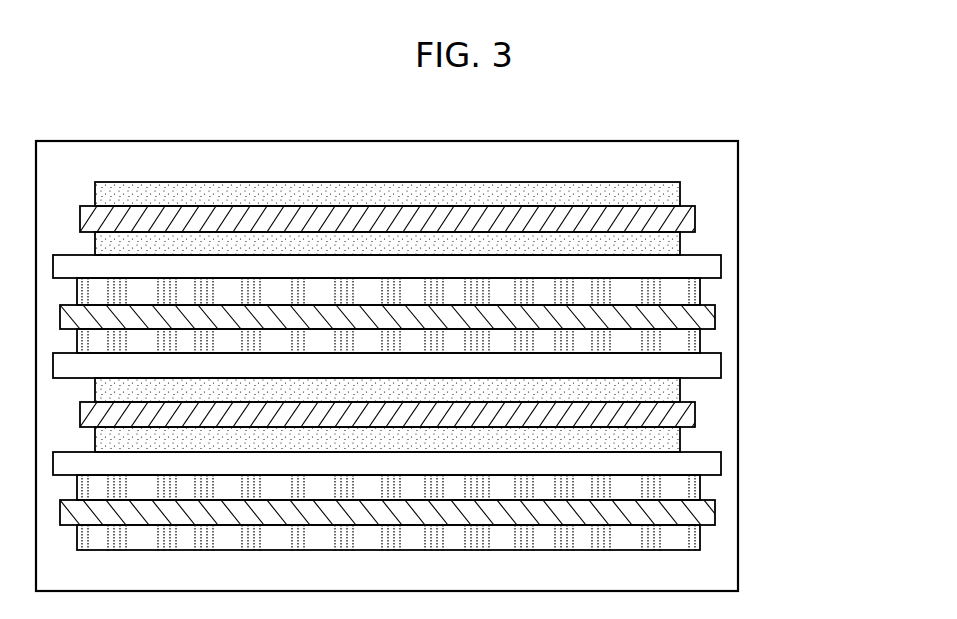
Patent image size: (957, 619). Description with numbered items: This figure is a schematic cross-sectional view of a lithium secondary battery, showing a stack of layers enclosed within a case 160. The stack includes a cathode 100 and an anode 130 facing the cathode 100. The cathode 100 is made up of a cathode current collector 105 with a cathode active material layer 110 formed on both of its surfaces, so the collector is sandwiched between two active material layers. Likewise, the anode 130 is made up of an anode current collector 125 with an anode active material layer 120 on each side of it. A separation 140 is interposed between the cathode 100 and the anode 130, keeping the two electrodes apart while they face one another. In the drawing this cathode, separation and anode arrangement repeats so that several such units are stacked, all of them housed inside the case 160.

The cathode 100 is at (483, 315).
The cathode current collector 105 is at (687, 218).
The cathode active material layer 110 is at (672, 193).
The anode active material layer 120 is at (693, 288).
The anode current collector 125 is at (710, 313).
The anode 130 is at (473, 414).
The separation 140 is at (592, 265).
The case 160 is at (738, 513).